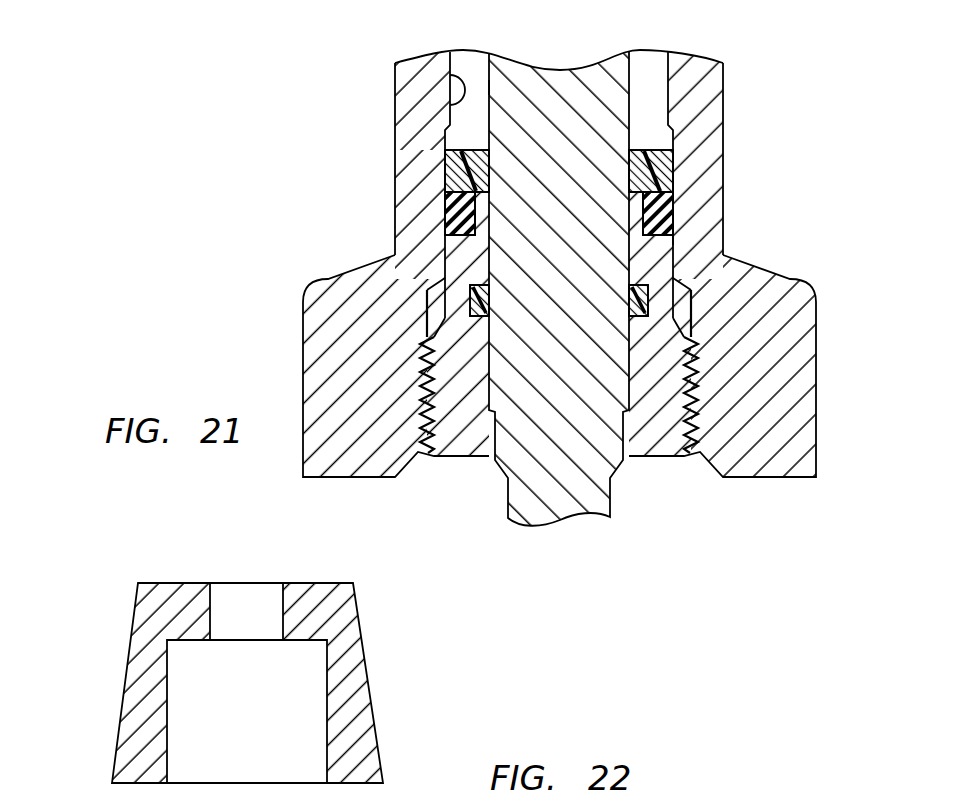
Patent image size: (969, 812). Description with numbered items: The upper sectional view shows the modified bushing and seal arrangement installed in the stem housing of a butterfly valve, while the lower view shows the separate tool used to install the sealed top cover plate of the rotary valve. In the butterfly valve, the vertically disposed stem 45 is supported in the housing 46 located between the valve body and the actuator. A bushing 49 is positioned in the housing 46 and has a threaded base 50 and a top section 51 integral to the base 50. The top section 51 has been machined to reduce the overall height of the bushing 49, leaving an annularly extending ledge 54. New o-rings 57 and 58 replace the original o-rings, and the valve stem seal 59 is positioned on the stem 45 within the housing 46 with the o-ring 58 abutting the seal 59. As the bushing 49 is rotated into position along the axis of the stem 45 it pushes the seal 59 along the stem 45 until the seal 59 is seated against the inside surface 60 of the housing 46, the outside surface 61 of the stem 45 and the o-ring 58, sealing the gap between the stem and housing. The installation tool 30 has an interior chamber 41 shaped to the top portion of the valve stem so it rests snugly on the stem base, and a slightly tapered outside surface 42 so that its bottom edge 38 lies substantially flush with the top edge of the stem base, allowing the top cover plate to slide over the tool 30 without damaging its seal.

In FIG. 22, the installation tool 30 is at (150, 563).
In FIG. 22, the bottom edge 38 is at (112, 783).
In FIG. 22, the interior chamber 41 is at (295, 700).
In FIG. 22, the tapered outside surface 42 is at (132, 627).
In FIG. 21, the stem 45 is at (560, 523).
In FIG. 21, the housing 46 is at (703, 107).
In FIG. 21, the bushing 49 is at (440, 472).
In FIG. 21, the threaded base 50 is at (655, 445).
In FIG. 21, the top section 51 is at (462, 263).
In FIG. 21, the ledge 54 is at (665, 240).
In FIG. 21, the o-ring 57 is at (452, 212).
In FIG. 21, the o-ring 58 is at (472, 307).
In FIG. 21, the valve stem seal 59 is at (455, 172).
In FIG. 21, the inside surface 60 is at (458, 82).
In FIG. 21, the outside surface 61 is at (489, 88).